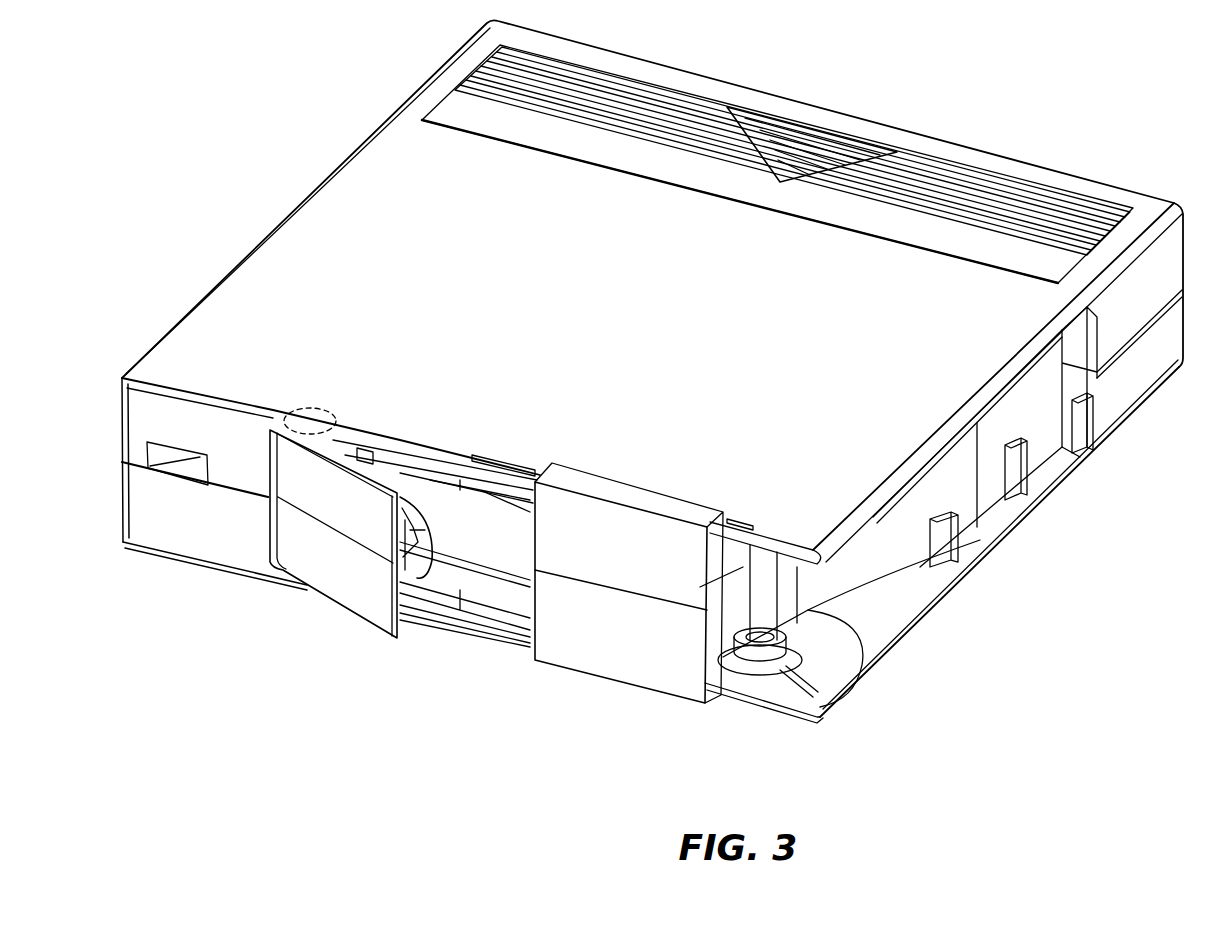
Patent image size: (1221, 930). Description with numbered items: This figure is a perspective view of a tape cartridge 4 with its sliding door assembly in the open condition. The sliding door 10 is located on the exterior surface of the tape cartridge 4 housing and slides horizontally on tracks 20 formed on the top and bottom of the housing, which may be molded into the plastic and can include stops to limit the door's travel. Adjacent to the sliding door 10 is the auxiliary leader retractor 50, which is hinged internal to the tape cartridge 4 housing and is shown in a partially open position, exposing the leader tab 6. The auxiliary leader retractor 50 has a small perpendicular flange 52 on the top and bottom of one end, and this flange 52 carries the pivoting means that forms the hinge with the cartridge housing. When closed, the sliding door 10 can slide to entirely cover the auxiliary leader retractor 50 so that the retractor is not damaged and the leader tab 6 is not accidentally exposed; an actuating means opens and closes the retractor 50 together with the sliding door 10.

The tape cartridge 4 is at (404, 160).
The leader tab 6 is at (423, 607).
The sliding door 10 is at (593, 652).
The tracks 20 is at (517, 462).
The auxiliary leader retractor 50 is at (350, 580).
The flange 52 is at (322, 407).